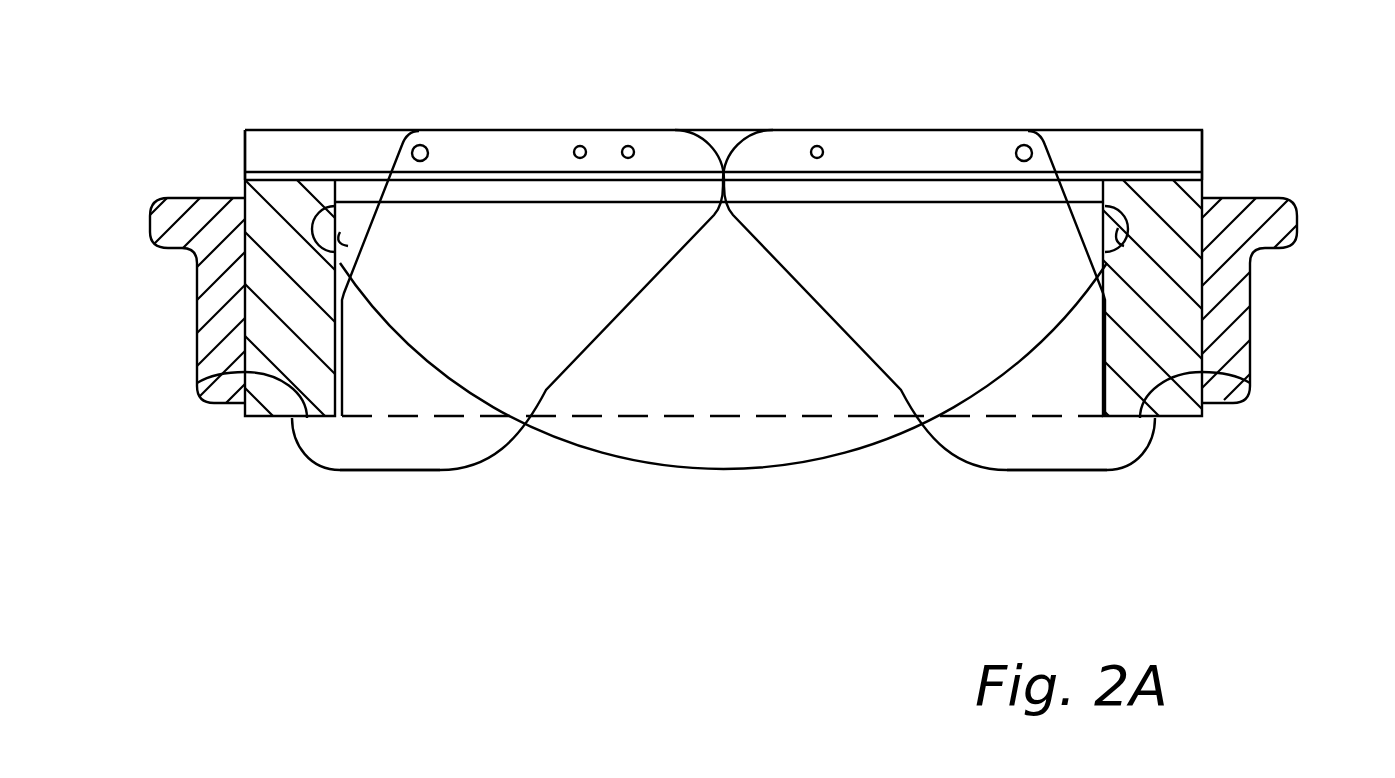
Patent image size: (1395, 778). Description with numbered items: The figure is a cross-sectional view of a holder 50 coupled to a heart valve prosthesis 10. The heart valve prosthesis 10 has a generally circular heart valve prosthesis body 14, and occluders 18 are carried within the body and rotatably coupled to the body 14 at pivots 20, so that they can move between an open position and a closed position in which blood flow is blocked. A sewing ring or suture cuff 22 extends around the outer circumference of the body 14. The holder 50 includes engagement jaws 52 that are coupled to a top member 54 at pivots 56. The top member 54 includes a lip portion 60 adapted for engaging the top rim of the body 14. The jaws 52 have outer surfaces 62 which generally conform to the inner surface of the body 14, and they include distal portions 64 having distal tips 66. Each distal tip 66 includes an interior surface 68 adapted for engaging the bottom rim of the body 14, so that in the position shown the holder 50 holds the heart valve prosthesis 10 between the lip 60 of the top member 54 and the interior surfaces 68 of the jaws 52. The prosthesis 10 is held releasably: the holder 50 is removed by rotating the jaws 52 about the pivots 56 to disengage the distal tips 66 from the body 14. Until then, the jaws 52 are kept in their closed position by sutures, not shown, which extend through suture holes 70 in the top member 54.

The heart valve prosthesis 10 is at (190, 124).
The heart valve prosthesis body 14 is at (270, 392).
The occluders 18 is at (740, 452).
The pivots 20 is at (346, 244).
The sewing ring or suture cuff 22 is at (153, 232).
The holder 50 is at (1210, 132).
The engagement jaws 52 is at (540, 360).
The top member 54 is at (1190, 156).
The pivots 56 is at (426, 144).
The lip portion 60 is at (245, 177).
The outer surfaces 62 is at (348, 346).
The distal portions 64 is at (377, 462).
The distal tips 66 is at (318, 447).
The interior surface 68 is at (197, 383).
The suture holes 70 is at (630, 145).